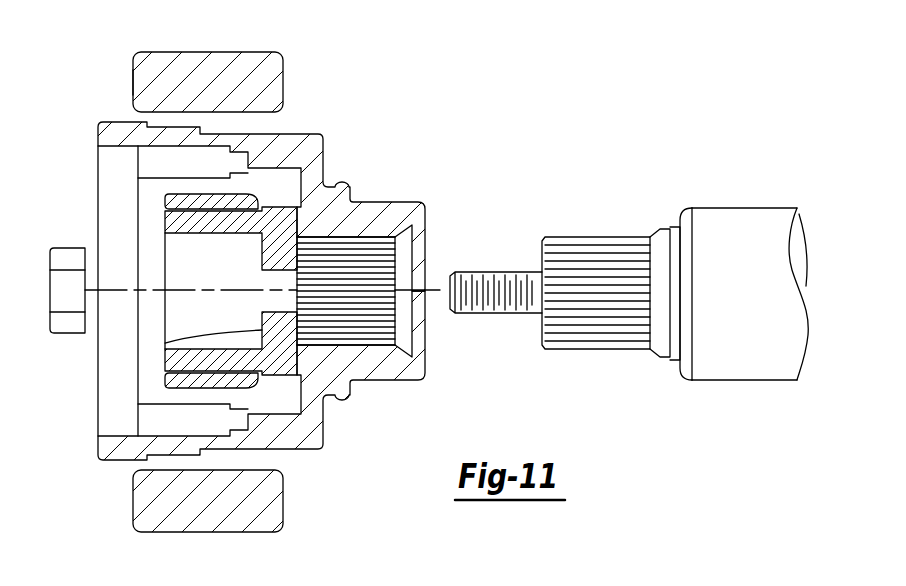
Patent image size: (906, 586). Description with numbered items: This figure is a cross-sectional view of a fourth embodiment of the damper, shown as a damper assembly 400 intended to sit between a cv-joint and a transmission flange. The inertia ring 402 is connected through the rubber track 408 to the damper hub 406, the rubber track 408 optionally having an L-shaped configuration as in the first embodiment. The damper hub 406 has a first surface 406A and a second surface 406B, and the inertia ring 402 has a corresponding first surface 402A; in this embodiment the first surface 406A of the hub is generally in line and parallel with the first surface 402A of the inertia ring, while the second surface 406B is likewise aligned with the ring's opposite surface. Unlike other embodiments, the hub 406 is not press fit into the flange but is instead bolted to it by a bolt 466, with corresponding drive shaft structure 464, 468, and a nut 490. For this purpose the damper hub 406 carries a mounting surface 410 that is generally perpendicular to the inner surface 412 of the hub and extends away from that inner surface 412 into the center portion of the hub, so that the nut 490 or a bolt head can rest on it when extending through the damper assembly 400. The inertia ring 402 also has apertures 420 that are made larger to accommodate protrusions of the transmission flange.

The damper assembly 400 is at (379, 160).
The inertia ring 402 is at (213, 52).
The first surface of inertia ring 402A is at (133, 87).
The damper hub 406 is at (229, 311).
The first surface of damper hub 406A is at (163, 250).
The second surface of damper hub 406B is at (345, 396).
The rubber track 408 is at (210, 210).
The mounting surface 410 is at (165, 343).
The inner surface of damper hub 412 is at (229, 324).
The apertures of inertia ring 420 is at (253, 118).
The drive shaft structure 464 is at (608, 253).
The bolt 466 is at (495, 278).
The drive shaft structure 468 is at (722, 222).
The nut 490 is at (63, 259).